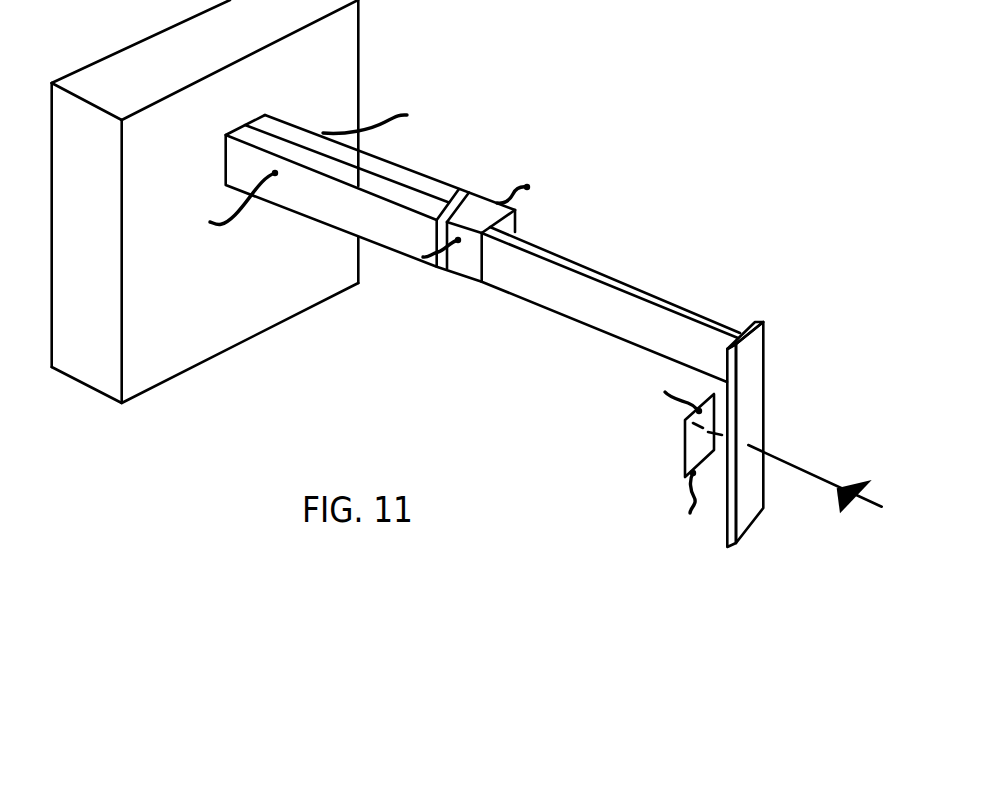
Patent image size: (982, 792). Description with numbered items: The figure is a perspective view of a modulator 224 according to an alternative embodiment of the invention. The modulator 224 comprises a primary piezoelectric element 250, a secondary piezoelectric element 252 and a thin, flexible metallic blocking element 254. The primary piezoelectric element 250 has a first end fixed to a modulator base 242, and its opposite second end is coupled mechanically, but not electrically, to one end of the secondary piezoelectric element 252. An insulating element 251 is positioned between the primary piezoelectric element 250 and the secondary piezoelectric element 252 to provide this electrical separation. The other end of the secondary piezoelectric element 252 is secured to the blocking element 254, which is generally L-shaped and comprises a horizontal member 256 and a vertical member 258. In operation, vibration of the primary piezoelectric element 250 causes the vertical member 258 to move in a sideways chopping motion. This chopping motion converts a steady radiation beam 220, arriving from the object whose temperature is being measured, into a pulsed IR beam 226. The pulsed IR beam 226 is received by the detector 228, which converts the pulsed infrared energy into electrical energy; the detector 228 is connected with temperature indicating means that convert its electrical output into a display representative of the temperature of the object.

The steady radiation beam 220 is at (838, 487).
The modulator 224 is at (584, 86).
The pulsed IR beam 226 is at (719, 437).
The detector 228 is at (697, 437).
The modulator base 242 is at (218, 323).
The primary piezoelectric element 250 is at (398, 237).
The insulating element 251 is at (496, 203).
The secondary piezoelectric element 252 is at (472, 262).
The blocking element 254 is at (701, 387).
The horizontal member 256 is at (668, 323).
The vertical member 258 is at (750, 397).